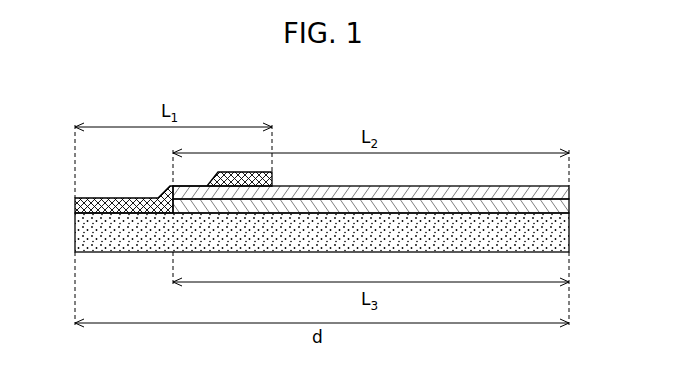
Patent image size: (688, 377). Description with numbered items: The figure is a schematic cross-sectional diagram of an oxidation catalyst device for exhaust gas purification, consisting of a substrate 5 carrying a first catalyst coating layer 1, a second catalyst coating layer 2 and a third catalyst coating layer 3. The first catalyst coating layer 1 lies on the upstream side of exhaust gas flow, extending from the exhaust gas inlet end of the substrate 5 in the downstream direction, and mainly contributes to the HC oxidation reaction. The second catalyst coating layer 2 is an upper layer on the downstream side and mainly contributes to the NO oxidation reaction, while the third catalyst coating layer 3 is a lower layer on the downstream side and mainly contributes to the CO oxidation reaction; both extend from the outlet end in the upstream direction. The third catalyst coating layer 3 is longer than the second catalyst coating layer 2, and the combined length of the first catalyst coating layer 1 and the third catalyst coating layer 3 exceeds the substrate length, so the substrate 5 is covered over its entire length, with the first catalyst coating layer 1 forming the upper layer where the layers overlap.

The first catalyst coating layer 1 is at (75, 198).
The second catalyst coating layer 2 is at (563, 194).
The third catalyst coating layer 3 is at (557, 207).
The substrate 5 is at (563, 233).